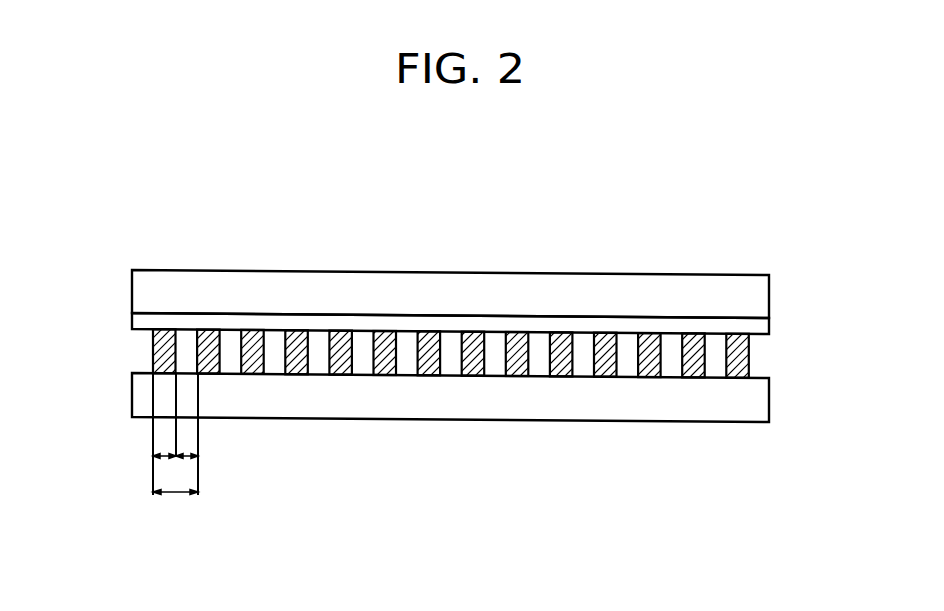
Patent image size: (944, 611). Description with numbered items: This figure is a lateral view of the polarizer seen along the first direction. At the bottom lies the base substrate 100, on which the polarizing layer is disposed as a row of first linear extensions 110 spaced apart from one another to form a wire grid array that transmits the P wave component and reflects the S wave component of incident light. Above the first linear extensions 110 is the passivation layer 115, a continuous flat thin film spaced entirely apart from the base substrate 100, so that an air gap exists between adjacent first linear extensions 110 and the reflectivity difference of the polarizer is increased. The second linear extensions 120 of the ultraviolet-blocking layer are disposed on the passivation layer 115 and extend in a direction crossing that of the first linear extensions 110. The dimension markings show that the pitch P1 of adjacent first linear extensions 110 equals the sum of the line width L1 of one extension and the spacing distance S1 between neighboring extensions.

The base substrate 100 is at (136, 396).
The first linear extensions 110 is at (750, 352).
The passivation layer 115 is at (136, 322).
The second linear extensions 120 is at (767, 291).
The line width L1 is at (163, 458).
The spacing distance S1 is at (188, 458).
The pitch P1 is at (175, 506).